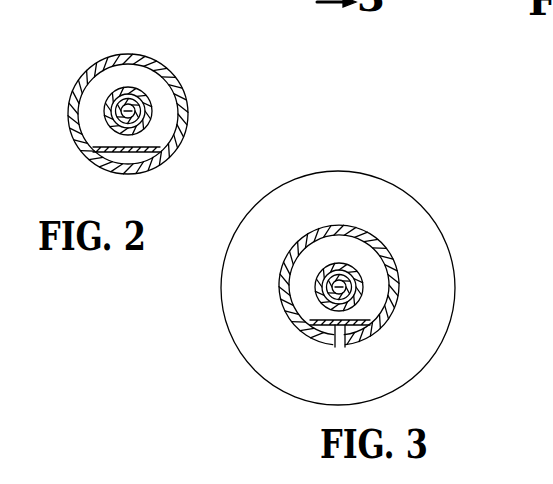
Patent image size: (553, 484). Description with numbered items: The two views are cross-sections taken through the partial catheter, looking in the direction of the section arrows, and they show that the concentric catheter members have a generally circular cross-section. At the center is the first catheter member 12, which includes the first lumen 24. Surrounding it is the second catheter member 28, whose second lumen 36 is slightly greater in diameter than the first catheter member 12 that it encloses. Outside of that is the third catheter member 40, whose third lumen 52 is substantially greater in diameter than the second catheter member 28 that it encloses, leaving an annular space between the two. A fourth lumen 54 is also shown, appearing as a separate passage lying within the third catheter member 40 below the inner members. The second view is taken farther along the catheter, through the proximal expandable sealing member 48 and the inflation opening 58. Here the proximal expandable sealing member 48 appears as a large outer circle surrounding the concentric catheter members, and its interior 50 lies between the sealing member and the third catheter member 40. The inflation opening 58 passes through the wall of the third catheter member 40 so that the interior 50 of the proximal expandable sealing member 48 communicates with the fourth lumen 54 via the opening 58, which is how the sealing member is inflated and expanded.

In FIG. 2, the first catheter member 12 is at (105, 118).
In FIG. 3, the first catheter member 12 is at (322, 297).
In FIG. 2, the first lumen 24 is at (131, 114).
In FIG. 3, the first lumen 24 is at (345, 282).
In FIG. 2, the second catheter member 28 is at (103, 106).
In FIG. 3, the second catheter member 28 is at (325, 290).
In FIG. 2, the second lumen 36 is at (136, 128).
In FIG. 3, the second lumen 36 is at (358, 293).
In FIG. 2, the third catheter member 40 is at (137, 57).
In FIG. 3, the third catheter member 40 is at (339, 230).
In FIG. 3, the proximal expandable sealing member 48 is at (434, 220).
In FIG. 3, the interior of the proximal expandable sealing member 50 is at (366, 200).
In FIG. 2, the third lumen 52 is at (157, 96).
In FIG. 3, the third lumen 52 is at (377, 305).
In FIG. 2, the fourth lumen 54 is at (134, 156).
In FIG. 3, the fourth lumen 54 is at (366, 327).
In FIG. 3, the inflation opening 58 is at (340, 345).